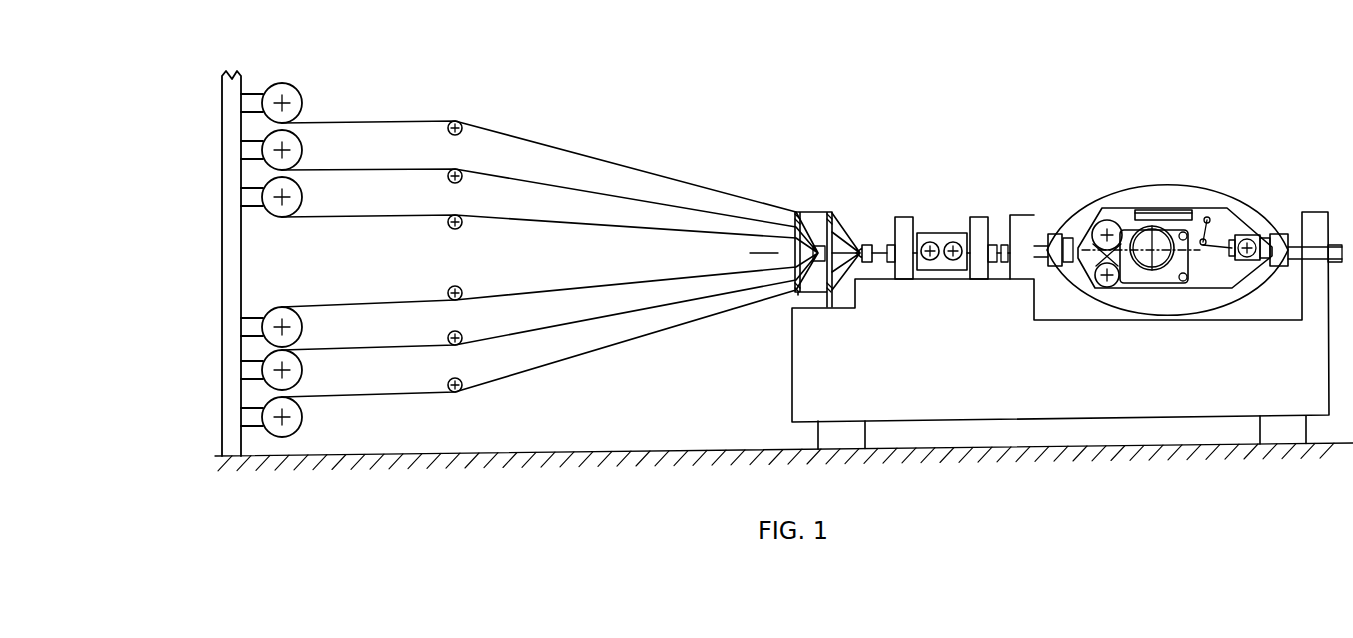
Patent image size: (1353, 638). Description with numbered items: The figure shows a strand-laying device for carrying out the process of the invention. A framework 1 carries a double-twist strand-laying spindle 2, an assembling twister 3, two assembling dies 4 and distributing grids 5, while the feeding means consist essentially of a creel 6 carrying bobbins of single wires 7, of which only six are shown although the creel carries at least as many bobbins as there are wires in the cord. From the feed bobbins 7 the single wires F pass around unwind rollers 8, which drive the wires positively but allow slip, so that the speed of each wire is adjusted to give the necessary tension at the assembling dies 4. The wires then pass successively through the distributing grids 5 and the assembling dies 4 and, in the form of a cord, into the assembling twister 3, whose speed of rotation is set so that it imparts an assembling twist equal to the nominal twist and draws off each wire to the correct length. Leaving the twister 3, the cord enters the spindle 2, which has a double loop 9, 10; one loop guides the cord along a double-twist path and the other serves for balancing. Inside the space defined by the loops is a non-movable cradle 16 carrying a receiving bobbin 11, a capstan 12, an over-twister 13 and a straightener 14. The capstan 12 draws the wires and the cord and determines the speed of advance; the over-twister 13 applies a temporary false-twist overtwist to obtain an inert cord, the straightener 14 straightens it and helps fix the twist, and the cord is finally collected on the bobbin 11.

The framework 1 is at (1033, 400).
The double-twist strand-laying spindle 2 is at (1188, 249).
The assembling twister 3 is at (947, 237).
The assembling dies 4 is at (867, 242).
The distributing grids 5 is at (828, 213).
The creel 6 is at (228, 250).
The bobbins of single wires 7 is at (302, 197).
The unwind rollers 8 is at (460, 217).
The loop 9 is at (1195, 188).
The loop 10 is at (1233, 290).
The receiving bobbin 11 is at (1156, 240).
The capstan 12 is at (1103, 232).
The over-twister 13 is at (1253, 240).
The straightener 14 is at (1140, 215).
The cradle 16 is at (1205, 280).
The single wires F is at (588, 223).